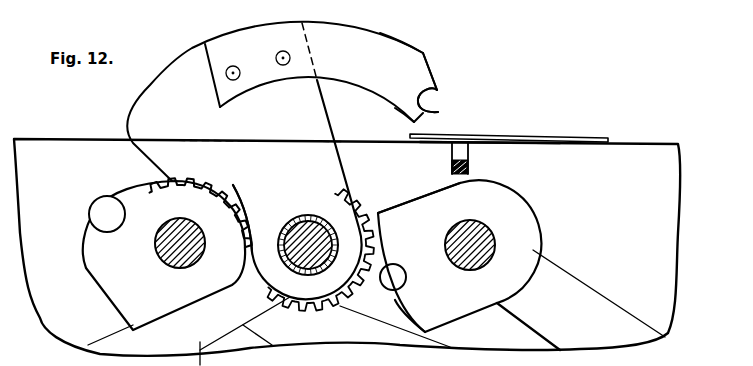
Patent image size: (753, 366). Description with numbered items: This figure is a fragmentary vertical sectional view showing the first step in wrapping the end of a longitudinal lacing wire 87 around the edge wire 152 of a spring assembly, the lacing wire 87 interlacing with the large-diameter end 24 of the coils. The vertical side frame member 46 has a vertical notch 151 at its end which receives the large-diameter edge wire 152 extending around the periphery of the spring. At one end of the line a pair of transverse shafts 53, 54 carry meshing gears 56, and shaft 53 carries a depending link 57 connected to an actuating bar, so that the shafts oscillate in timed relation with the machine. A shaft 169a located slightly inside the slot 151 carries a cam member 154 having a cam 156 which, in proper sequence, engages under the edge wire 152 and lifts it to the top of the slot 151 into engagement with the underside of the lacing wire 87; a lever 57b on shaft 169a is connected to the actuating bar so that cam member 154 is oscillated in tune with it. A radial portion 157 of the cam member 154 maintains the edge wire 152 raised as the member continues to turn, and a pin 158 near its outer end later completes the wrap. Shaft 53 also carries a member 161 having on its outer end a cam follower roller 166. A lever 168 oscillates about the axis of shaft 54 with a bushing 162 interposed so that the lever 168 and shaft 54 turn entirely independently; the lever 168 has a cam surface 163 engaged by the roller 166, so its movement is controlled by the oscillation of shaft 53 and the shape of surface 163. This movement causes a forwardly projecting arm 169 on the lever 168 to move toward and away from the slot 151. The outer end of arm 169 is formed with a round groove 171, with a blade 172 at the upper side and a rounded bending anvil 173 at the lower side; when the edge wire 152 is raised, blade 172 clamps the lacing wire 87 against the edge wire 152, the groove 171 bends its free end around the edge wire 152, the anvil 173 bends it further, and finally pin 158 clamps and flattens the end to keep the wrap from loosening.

The large-diameter end 24 is at (497, 142).
The side frame member 46 is at (665, 210).
The transverse shaft 53 is at (172, 265).
The transverse shaft 54 is at (313, 224).
The meshing gears 56 is at (157, 182).
The depending link 57 is at (293, 336).
The lever 57b is at (587, 292).
The longitudinal crimped lacing wire 87 is at (533, 137).
The vertical notch 151 is at (458, 148).
The edge wire 152 is at (468, 166).
The cam member 154 is at (500, 200).
The cam 156 is at (397, 210).
The radial portion 157 is at (402, 317).
The pin 158 is at (393, 265).
The member 161 is at (97, 265).
The bushing 162 is at (283, 230).
The cam surface 163 is at (233, 190).
The cam follower roller 166 is at (97, 208).
The lever 168 is at (158, 103).
The forwardly projecting arm 169 is at (392, 42).
The shaft 169a is at (490, 238).
The round groove 171 is at (438, 112).
The blade 172 is at (436, 92).
The rounded bending anvil 173 is at (410, 121).